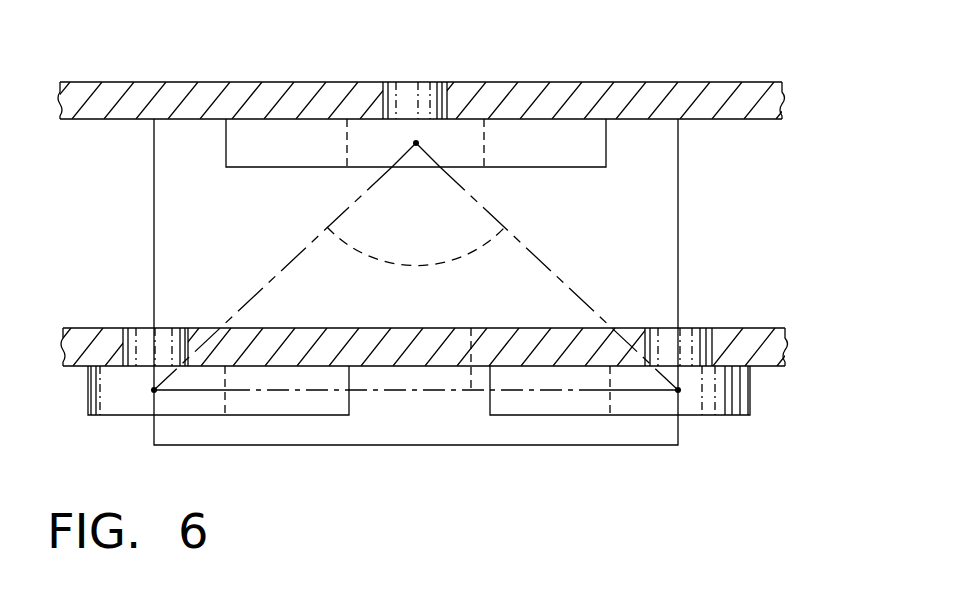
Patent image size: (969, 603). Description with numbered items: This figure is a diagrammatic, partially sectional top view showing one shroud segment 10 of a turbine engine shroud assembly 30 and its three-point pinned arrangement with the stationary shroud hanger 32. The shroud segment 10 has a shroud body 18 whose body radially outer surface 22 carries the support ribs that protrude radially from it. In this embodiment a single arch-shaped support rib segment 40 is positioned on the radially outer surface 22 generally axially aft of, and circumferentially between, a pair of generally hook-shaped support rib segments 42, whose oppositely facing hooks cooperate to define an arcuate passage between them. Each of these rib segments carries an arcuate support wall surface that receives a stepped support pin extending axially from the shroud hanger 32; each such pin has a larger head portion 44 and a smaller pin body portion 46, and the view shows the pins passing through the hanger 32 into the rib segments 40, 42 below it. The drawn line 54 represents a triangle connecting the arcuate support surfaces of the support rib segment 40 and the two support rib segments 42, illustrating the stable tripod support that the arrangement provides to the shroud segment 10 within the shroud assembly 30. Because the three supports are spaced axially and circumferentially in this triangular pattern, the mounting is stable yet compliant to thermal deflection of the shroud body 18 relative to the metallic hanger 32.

The shroud segment 10 is at (480, 466).
The shroud body 18 is at (678, 262).
The body radially outer surface 22 is at (628, 248).
The turbine engine shroud assembly 30 is at (820, 205).
The shroud hanger 32 is at (732, 84).
The support rib segment 40 is at (545, 152).
The support rib segments 42 is at (307, 405).
The head portion 44 is at (372, 152).
The pin body portion 46 is at (412, 92).
The line 54 is at (470, 320).